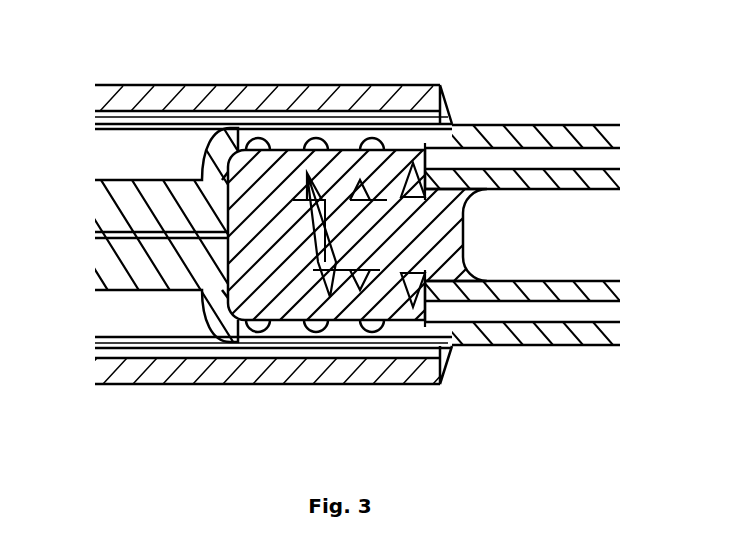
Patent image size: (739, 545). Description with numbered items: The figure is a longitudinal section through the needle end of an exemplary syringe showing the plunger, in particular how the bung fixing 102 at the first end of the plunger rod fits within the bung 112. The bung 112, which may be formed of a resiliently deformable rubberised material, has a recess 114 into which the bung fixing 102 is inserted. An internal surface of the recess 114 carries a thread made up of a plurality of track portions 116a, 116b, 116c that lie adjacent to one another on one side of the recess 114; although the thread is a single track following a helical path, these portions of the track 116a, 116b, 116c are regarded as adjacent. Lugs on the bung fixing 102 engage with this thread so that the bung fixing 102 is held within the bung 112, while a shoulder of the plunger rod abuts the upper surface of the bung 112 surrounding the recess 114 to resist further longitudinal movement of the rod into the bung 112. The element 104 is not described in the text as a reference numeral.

The bung fixing 102 is at (385, 231).
The tube 104 is at (606, 172).
The bung 112 is at (253, 256).
The recess 114 is at (352, 325).
The track portion 116a is at (290, 156).
The track portion 116b is at (360, 176).
The track portion 116c is at (413, 165).